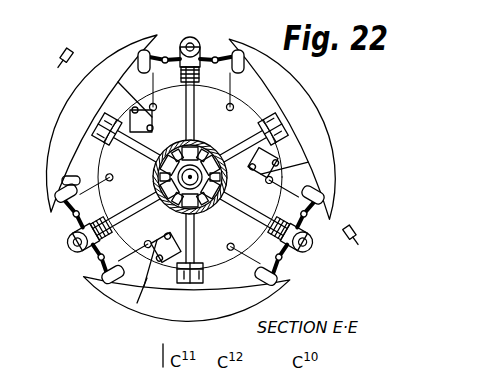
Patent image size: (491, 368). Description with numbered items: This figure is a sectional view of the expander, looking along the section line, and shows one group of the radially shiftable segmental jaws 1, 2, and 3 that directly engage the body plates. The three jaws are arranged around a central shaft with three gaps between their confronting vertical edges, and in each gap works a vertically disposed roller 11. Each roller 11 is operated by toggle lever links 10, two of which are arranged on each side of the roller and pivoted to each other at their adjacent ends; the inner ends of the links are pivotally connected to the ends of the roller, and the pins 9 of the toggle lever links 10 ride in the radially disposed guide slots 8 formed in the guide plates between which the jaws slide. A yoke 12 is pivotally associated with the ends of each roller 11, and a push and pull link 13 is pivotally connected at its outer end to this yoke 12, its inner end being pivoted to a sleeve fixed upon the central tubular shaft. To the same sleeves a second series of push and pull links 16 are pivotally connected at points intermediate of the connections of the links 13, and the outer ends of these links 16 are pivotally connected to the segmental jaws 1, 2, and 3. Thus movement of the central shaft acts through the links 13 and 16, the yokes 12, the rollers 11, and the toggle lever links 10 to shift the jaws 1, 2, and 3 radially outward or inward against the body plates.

The segmental jaw 1 is at (107, 50).
The segmental jaw 2 is at (317, 110).
The segmental jaw 3 is at (207, 307).
The guide slot 8 is at (70, 176).
The pin 9 is at (50, 168).
The toggle lever link 10 is at (252, 27).
The roller 11 is at (305, 259).
The yoke 12 is at (213, 18).
The push and pull link 13 is at (62, 66).
The push and pull link 16 is at (179, 331).